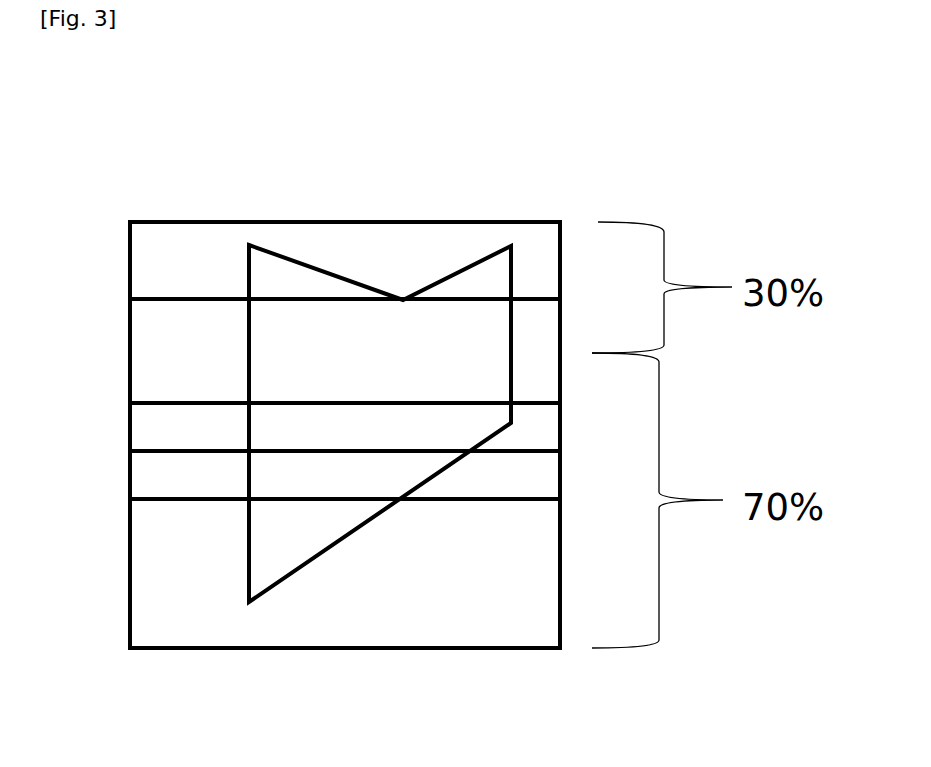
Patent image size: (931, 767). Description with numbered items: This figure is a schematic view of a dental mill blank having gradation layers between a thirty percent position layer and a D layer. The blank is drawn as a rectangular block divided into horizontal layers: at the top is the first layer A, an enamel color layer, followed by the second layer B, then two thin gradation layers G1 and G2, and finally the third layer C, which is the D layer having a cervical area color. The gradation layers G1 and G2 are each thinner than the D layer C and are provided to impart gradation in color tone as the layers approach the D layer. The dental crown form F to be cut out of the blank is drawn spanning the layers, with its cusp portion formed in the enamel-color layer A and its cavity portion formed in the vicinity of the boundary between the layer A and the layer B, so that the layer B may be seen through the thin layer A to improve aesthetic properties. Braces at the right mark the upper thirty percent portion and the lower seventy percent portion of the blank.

The first layer (W layer, enamel color layer) A is at (345, 260).
The second layer B is at (345, 351).
The G1 layer G1 is at (345, 427).
The G2 layer G2 is at (345, 475).
The third layer (D layer, cervical area color layer) C is at (345, 573).
The dental crown form F is at (436, 365).